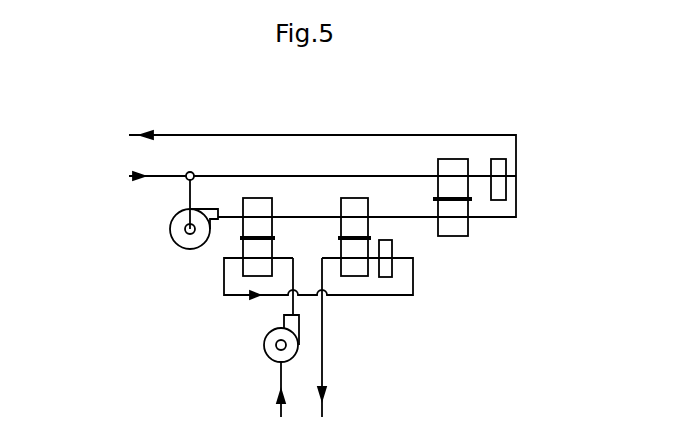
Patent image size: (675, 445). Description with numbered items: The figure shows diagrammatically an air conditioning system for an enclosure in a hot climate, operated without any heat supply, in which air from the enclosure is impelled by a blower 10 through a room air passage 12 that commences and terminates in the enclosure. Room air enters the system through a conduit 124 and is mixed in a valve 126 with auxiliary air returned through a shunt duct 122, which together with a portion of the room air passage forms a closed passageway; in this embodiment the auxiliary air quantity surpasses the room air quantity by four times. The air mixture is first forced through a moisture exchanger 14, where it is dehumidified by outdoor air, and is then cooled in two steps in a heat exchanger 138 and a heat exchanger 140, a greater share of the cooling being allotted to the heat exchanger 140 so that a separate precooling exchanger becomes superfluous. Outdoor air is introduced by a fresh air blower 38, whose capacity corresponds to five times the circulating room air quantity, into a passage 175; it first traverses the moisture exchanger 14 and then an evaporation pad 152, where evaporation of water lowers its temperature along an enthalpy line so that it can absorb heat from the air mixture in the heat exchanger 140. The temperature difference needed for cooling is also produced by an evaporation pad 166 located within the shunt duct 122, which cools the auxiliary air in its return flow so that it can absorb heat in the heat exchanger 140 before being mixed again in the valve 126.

The blower 10 is at (180, 232).
The passage 12 is at (425, 136).
The moisture exchanger 14 is at (255, 200).
The blower 38 is at (262, 347).
The shunt duct 122 is at (303, 175).
The conduit 124 is at (150, 178).
The valve 126 is at (191, 171).
The heat exchanger 138 is at (352, 203).
The heat exchanger 140 is at (455, 163).
The evaporation pad 152 is at (392, 245).
The evaporation pad 166 is at (502, 166).
The passage 175 is at (240, 297).